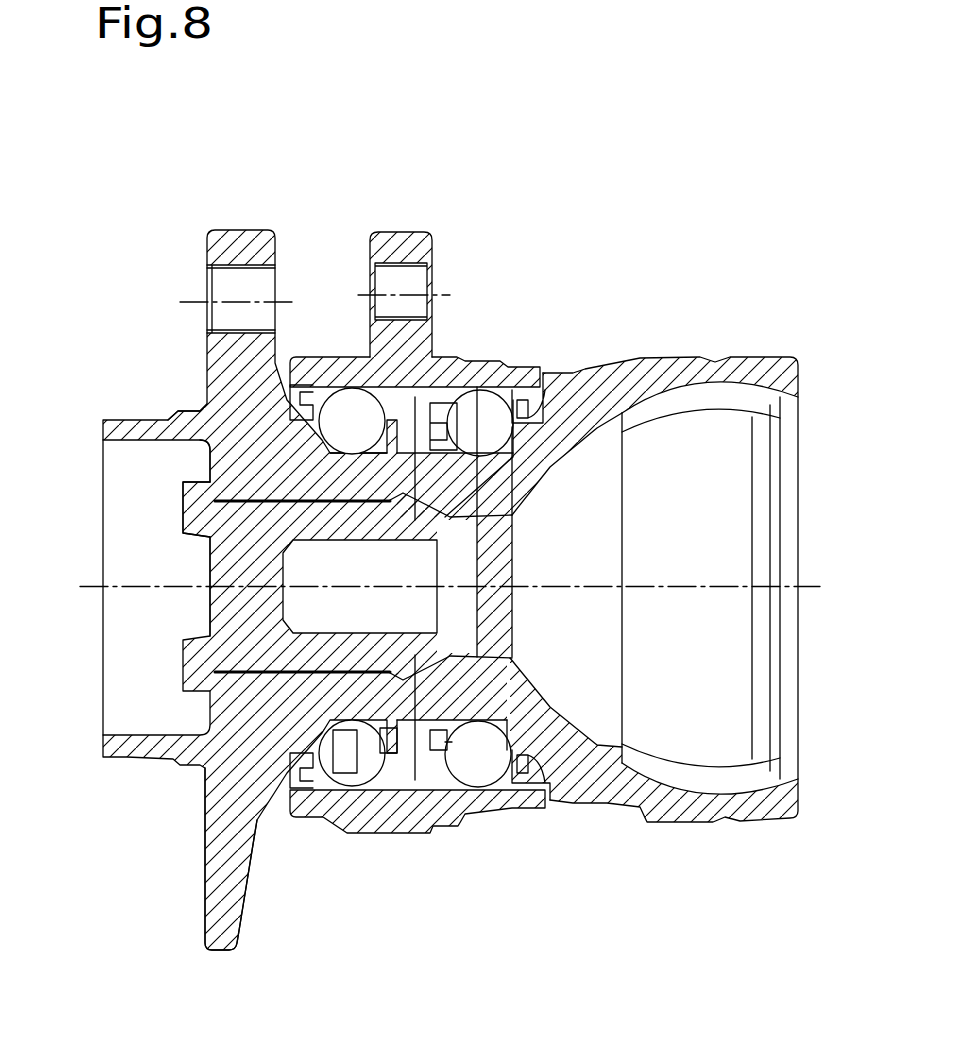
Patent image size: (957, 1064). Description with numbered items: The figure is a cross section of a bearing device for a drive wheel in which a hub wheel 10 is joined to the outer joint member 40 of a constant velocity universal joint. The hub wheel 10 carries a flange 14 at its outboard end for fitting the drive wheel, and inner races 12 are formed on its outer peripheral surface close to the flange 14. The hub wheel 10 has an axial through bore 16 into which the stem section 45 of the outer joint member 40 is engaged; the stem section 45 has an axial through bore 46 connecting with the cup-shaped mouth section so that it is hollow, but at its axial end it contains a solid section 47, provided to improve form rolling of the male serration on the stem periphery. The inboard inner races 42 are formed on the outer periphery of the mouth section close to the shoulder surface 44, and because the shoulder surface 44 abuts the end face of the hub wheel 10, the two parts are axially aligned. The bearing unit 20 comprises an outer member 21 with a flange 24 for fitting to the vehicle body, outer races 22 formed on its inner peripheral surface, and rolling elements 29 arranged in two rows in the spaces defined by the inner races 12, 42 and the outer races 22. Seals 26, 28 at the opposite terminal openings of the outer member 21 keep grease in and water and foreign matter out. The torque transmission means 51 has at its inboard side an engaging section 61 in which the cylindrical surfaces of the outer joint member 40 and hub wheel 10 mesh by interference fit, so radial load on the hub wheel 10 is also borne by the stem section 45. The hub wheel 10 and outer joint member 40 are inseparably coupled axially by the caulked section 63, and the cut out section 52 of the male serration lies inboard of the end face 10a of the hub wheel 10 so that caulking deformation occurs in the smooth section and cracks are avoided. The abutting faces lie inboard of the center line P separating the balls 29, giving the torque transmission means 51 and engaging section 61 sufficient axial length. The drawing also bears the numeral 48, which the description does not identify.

The hub wheel 10 is at (157, 768).
The end face of the hub wheel 10a is at (207, 472).
The inner races 12 is at (342, 455).
The flange 14 is at (207, 250).
The axial through bore 16 is at (415, 655).
The bearing unit 20 is at (417, 489).
The outer member 21 is at (480, 362).
The outer races 22 is at (332, 388).
The flange 24 is at (452, 252).
The seal 26 is at (280, 373).
The seal 28 is at (543, 380).
The rolling elements 29 is at (368, 400).
The outer joint member 40 is at (540, 603).
The inboard side inner races 42 is at (482, 448).
The shoulder surface 44 is at (435, 700).
The stem section 45 is at (345, 740).
The axial through bore 46 is at (365, 623).
The solid section 47 is at (220, 600).
The cup portion of outer joint member 48 is at (690, 370).
The torque transmission means 51 is at (277, 685).
The cut out section 52 is at (203, 405).
The engaging section 61 is at (413, 380).
The caulked section 63 is at (187, 515).
The center line P is at (477, 545).